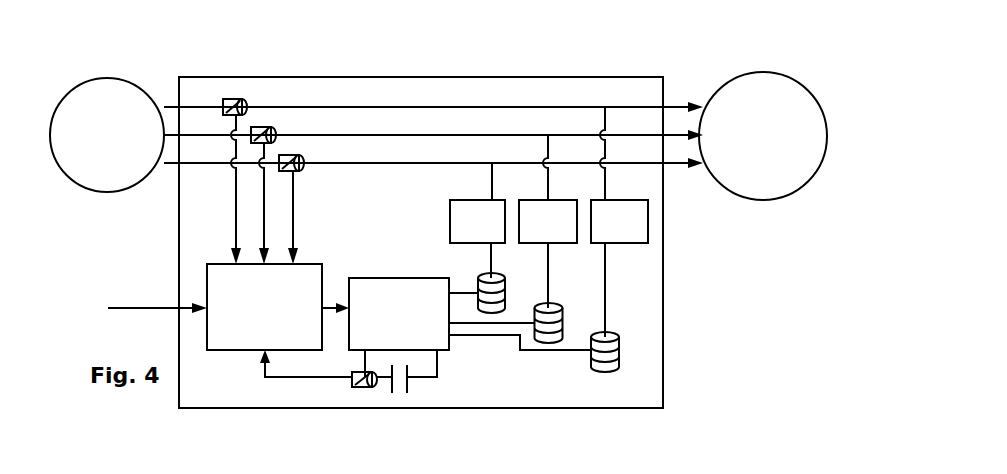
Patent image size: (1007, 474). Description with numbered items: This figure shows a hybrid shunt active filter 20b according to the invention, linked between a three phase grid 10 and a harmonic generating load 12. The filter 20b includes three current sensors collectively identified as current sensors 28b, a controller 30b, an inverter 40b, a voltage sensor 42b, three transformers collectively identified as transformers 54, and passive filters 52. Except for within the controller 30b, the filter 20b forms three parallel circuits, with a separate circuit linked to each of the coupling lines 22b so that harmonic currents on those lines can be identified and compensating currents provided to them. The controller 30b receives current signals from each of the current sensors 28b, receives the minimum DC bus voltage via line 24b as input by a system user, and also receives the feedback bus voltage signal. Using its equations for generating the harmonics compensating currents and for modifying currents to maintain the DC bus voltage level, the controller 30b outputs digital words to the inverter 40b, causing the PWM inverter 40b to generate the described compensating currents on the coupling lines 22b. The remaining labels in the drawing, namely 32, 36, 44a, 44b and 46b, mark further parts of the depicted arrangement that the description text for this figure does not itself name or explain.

The three phase grid 10 is at (88, 78).
The harmonic generating load 12 is at (763, 202).
The hybrid shunt filter 20b is at (335, 77).
The coupling lines 22b is at (352, 107).
The line 24b is at (135, 310).
The current sensors 28b is at (292, 170).
The controller 30b is at (207, 295).
The grid connection 32 is at (350, 6).
The filter branch 36 is at (478, 6).
The inverter 40b is at (445, 353).
The voltage sensor 42b is at (388, 393).
The voltage sensor 44a is at (678, 6).
The DC voltage sensor 44b is at (352, 387).
The filter tap lines 46b is at (493, 168).
The passive filters 52 is at (648, 222).
The transformers 54 is at (505, 293).